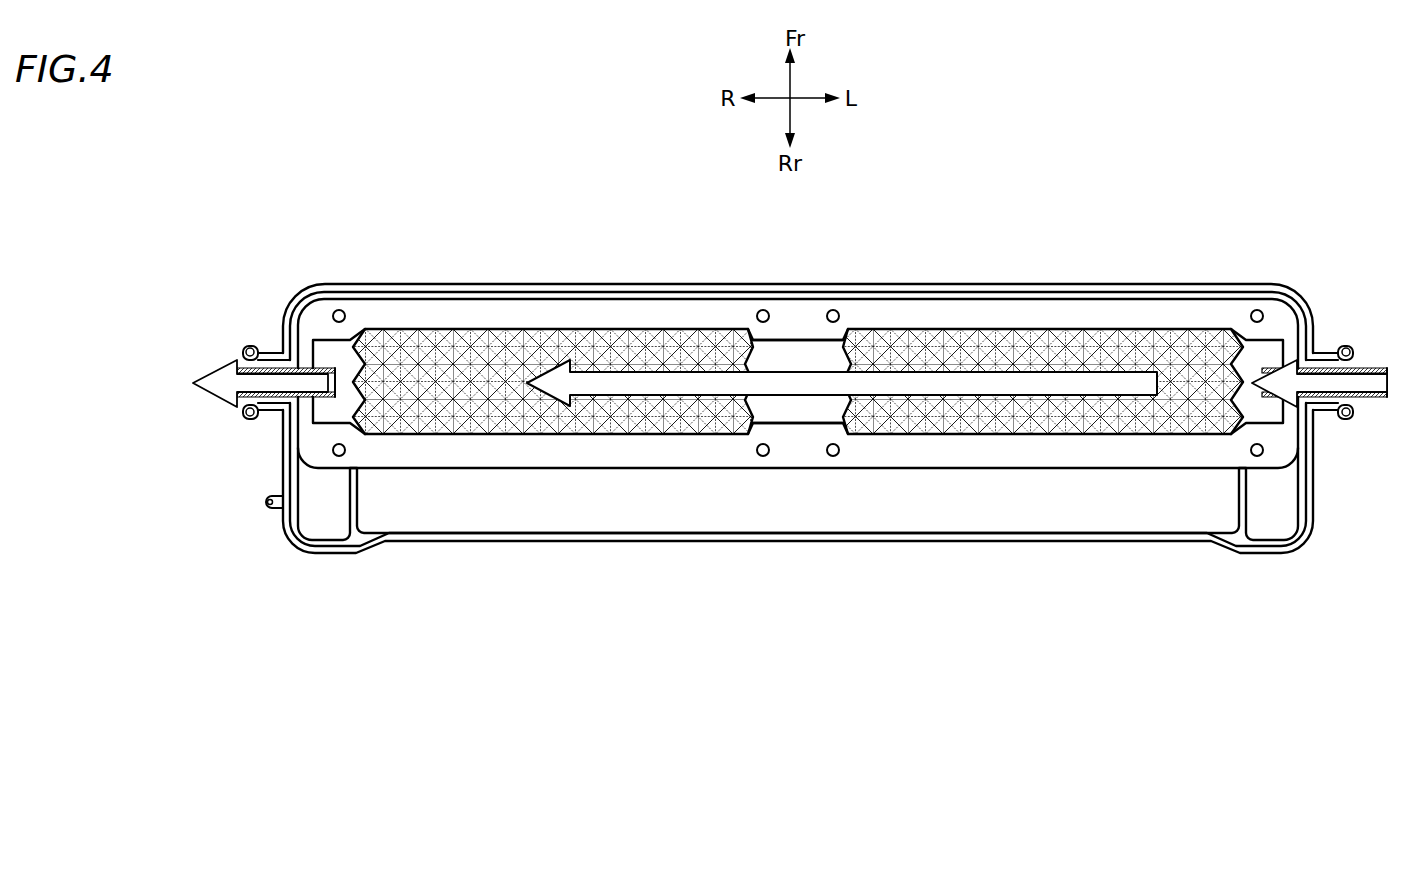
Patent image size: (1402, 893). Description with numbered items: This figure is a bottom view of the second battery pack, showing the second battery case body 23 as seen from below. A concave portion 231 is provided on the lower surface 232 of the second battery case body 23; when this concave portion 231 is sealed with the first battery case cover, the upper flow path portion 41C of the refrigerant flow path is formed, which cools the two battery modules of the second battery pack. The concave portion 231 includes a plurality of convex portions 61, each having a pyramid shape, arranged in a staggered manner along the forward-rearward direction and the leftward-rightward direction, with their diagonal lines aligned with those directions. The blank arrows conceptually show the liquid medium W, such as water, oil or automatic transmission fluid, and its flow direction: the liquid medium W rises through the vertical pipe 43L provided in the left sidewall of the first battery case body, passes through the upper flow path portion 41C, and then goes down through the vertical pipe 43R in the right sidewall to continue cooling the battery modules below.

The second battery case body 23 is at (952, 286).
The concave portion 231 is at (1022, 329).
The lower surface 232 is at (1093, 308).
The upper flow path portion 41C is at (890, 324).
The vertical pipe 43R is at (275, 352).
The vertical pipe 43L is at (1322, 351).
The convex portions 61 is at (682, 329).
The liquid medium W is at (791, 380).